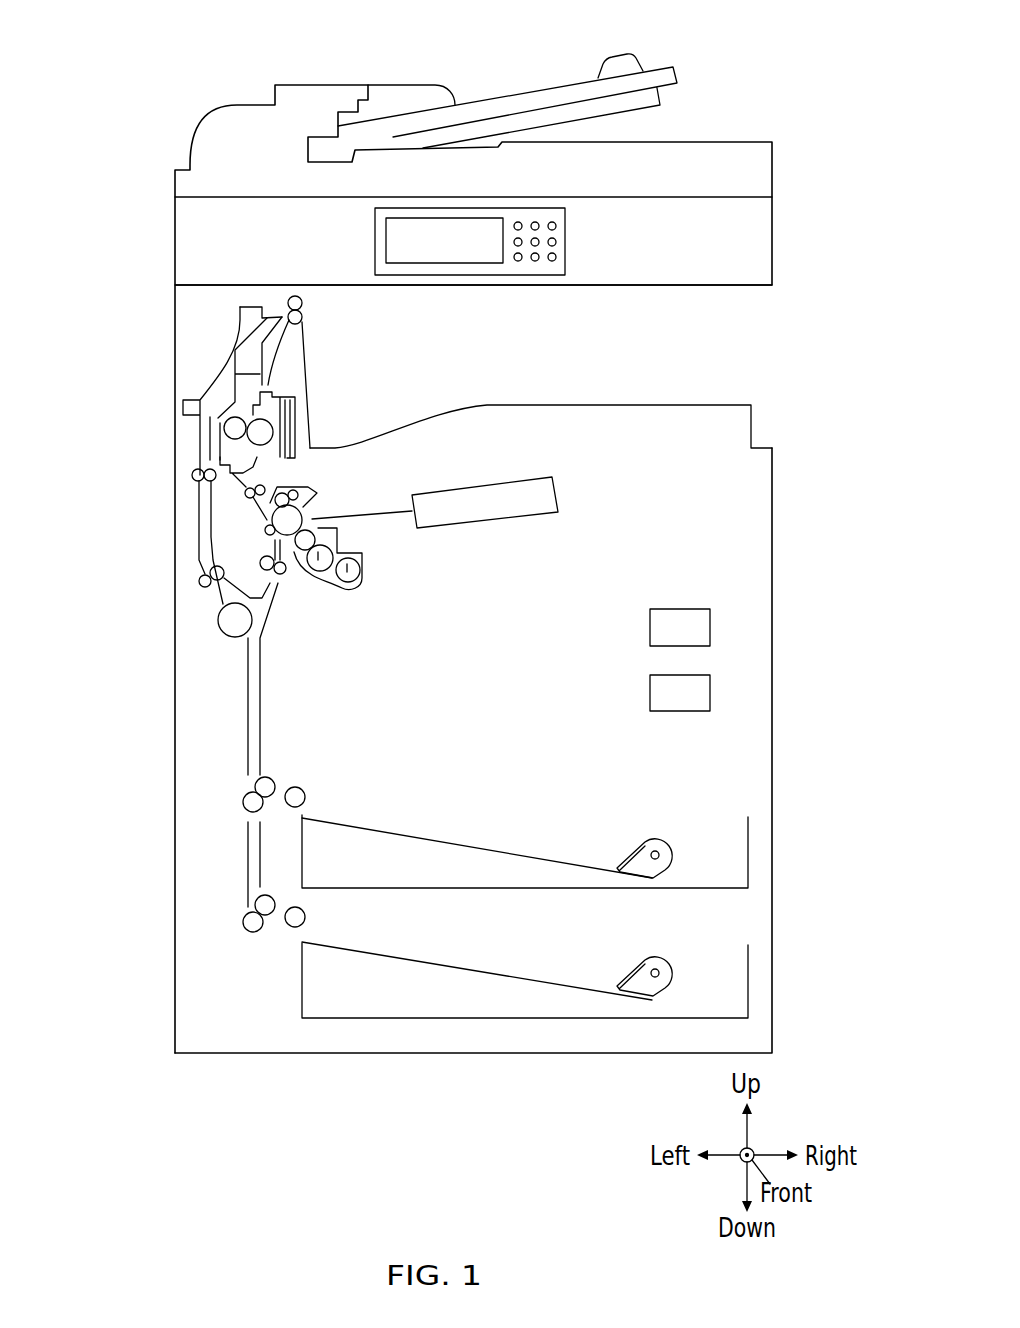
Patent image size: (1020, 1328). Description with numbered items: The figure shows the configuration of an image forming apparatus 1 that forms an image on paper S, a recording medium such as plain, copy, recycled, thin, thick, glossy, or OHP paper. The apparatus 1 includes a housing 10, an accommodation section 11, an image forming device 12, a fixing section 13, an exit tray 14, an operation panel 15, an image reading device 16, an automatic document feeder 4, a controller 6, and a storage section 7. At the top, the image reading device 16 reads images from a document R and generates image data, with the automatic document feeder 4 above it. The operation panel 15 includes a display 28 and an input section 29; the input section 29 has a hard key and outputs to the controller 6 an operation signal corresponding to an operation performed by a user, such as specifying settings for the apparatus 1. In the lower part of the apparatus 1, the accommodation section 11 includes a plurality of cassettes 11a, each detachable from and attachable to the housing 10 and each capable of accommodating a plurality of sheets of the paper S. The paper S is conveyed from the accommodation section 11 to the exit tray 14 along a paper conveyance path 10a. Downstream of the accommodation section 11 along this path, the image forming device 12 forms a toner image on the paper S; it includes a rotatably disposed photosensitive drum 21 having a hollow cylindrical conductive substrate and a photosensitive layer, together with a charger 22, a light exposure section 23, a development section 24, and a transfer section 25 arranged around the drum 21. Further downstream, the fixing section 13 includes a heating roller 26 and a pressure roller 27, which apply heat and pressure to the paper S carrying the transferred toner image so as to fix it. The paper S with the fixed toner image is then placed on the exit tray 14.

The image forming apparatus 1 is at (766, 97).
The automatic document feeder 4 is at (773, 171).
The image reading device 16 is at (773, 233).
The document R is at (530, 88).
The operation panel 15 is at (423, 212).
The display 28 is at (465, 235).
The input section 29 is at (535, 222).
The exit tray 14 is at (699, 395).
The paper conveyance path 10a is at (236, 664).
The fixing section 13 is at (115, 405).
The pressure roller 27 is at (227, 422).
The heating roller 26 is at (257, 438).
The image forming device 12 is at (586, 537).
The photosensitive drum 21 is at (268, 520).
The charger 22 is at (312, 503).
The transfer section 25 is at (267, 531).
The development section 24 is at (320, 571).
The light exposure section 23 is at (547, 495).
The controller 6 is at (710, 627).
The storage section 7 is at (710, 692).
The accommodation section 11 is at (716, 813).
The cassette 11a is at (748, 852).
The paper S is at (547, 858).
The housing 10 is at (175, 690).